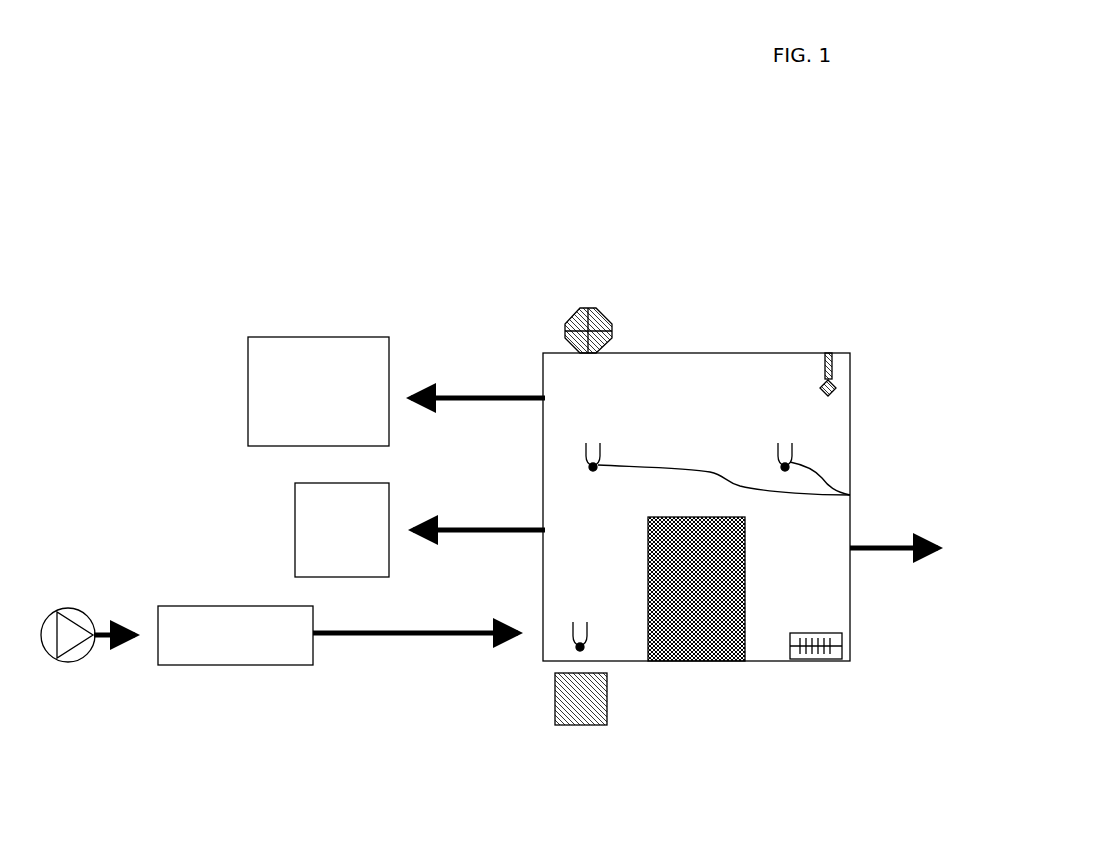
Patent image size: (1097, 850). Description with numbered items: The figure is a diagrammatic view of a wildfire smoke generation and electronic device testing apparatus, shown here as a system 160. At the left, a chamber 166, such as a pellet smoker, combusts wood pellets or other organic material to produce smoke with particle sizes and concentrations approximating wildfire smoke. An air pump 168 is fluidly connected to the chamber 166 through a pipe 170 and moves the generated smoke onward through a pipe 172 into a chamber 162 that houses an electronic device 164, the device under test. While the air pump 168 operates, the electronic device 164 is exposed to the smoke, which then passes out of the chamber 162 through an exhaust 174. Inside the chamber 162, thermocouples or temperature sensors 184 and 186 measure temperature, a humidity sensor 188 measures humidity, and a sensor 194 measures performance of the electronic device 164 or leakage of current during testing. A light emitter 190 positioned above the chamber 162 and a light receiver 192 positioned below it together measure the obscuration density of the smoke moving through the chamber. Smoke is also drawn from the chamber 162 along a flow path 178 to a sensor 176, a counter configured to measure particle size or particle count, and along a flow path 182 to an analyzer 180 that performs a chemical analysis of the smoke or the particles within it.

The test system 160 is at (624, 167).
The chamber 162 is at (696, 507).
The electronic device 164 is at (696, 589).
The chamber 166 is at (235, 635).
The air pump 168 is at (80, 613).
The pipe 170 is at (108, 638).
The pipe 172 is at (427, 638).
The exhaust 174 is at (883, 552).
The sensor 176 is at (342, 530).
The flow to counter 178 is at (443, 527).
The analyzer 180 is at (318, 391).
The flow to analyzer 182 is at (447, 392).
The temperature sensor 184 is at (850, 495).
The temperature sensor 186 is at (590, 640).
The humidity sensor 188 is at (833, 382).
The light emitter 190 is at (604, 322).
The light receiver 192 is at (585, 723).
The sensor 194 is at (826, 658).